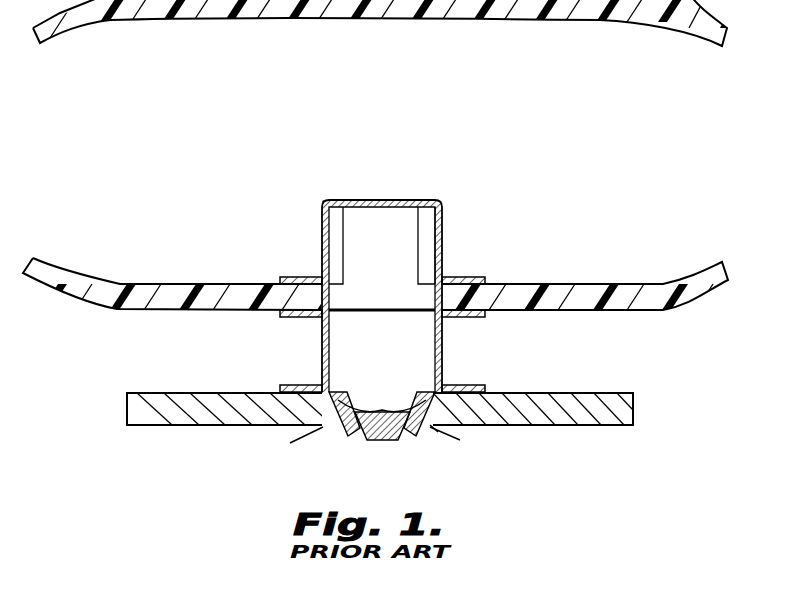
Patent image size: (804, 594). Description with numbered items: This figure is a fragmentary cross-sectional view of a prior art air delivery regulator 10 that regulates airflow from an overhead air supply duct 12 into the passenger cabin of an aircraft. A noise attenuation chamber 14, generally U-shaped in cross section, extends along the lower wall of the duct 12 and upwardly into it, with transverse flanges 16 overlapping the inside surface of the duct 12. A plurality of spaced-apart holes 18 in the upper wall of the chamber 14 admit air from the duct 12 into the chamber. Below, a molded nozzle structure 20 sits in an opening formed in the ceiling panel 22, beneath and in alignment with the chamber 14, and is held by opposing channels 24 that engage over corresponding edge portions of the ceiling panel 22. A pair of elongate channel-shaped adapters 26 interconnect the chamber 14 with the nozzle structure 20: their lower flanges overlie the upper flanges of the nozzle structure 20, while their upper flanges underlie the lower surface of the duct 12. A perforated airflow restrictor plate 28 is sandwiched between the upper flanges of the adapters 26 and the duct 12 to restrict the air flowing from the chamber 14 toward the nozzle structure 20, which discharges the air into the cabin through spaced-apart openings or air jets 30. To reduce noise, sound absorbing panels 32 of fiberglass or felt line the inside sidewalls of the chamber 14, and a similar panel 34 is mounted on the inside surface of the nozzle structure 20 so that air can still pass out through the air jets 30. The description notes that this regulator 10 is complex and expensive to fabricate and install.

The regulator 10 is at (515, 448).
The overhead air supply duct 12 is at (213, 22).
The noise attenuation chamber 14 is at (370, 236).
The transverse flanges 16 is at (297, 278).
The spaced-apart holes 18 is at (358, 200).
The molded nozzle structure 20 is at (427, 428).
The ceiling panel 22 is at (158, 426).
The opposing channels 24 is at (323, 435).
The elongate adapters 26 is at (319, 351).
The perforated airflow restrictor plate 28 is at (378, 309).
The air jets 30 is at (352, 425).
The sound absorbing panels 32 is at (427, 232).
The sound absorbing panel 34 is at (366, 410).